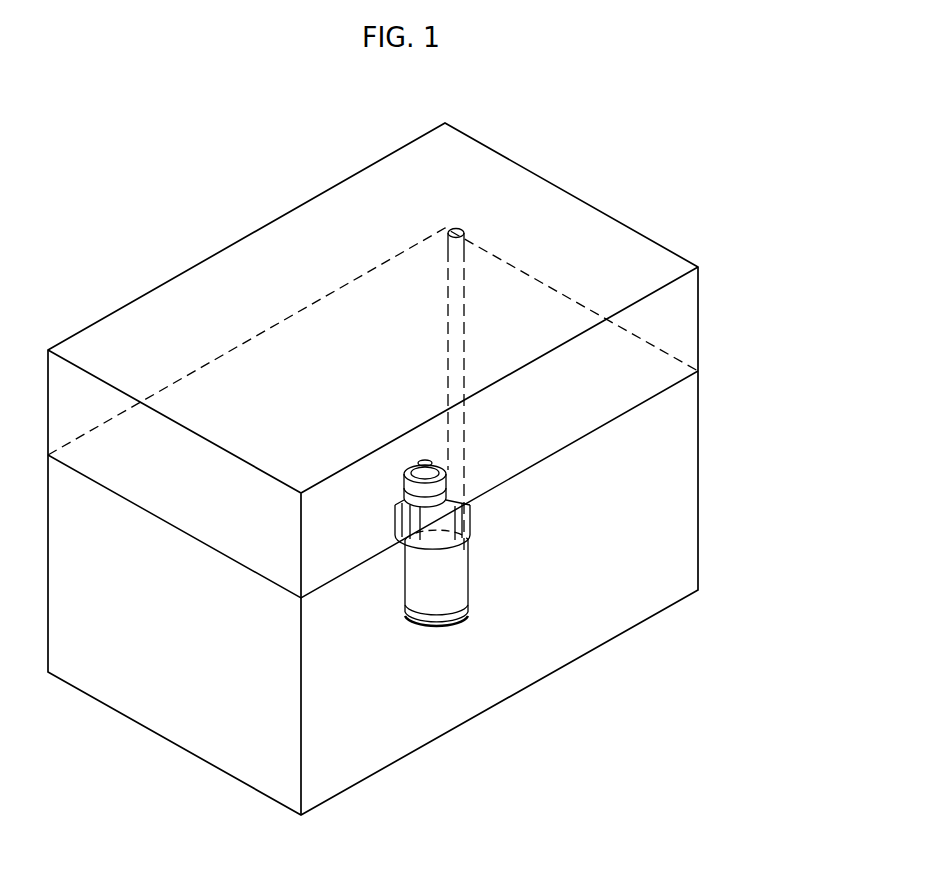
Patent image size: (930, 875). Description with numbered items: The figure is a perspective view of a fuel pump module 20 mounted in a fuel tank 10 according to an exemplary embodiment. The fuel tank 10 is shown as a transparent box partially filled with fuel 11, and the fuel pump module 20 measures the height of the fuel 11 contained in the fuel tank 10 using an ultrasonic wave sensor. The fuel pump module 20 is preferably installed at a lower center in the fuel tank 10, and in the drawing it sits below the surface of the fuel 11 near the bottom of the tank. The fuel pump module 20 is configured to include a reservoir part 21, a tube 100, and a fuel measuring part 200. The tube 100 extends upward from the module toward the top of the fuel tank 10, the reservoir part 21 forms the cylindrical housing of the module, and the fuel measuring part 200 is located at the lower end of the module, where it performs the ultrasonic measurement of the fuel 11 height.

The fuel tank 10 is at (246, 237).
The fuel 11 is at (603, 432).
The tube 100 is at (500, 262).
The fuel pump module 20 is at (536, 618).
The reservoir part 21 is at (483, 545).
The fuel measuring part 200 is at (455, 618).